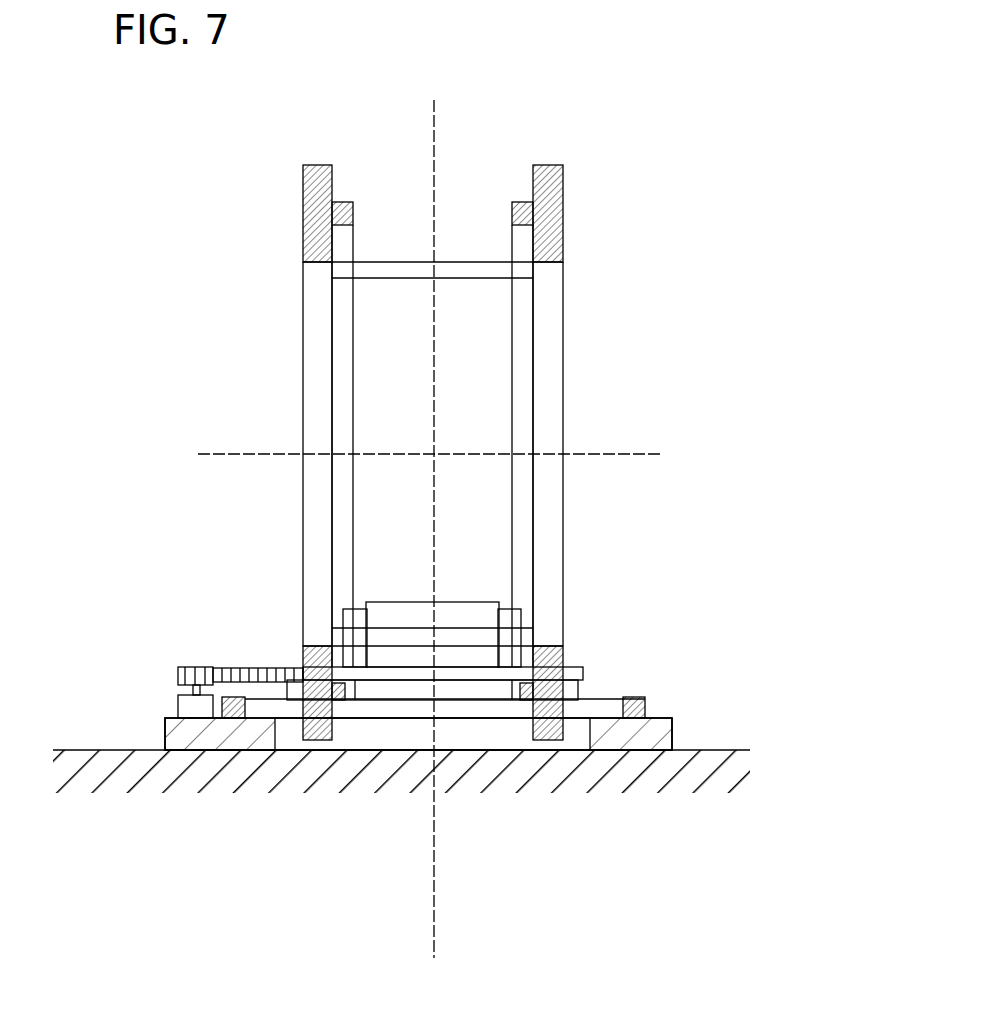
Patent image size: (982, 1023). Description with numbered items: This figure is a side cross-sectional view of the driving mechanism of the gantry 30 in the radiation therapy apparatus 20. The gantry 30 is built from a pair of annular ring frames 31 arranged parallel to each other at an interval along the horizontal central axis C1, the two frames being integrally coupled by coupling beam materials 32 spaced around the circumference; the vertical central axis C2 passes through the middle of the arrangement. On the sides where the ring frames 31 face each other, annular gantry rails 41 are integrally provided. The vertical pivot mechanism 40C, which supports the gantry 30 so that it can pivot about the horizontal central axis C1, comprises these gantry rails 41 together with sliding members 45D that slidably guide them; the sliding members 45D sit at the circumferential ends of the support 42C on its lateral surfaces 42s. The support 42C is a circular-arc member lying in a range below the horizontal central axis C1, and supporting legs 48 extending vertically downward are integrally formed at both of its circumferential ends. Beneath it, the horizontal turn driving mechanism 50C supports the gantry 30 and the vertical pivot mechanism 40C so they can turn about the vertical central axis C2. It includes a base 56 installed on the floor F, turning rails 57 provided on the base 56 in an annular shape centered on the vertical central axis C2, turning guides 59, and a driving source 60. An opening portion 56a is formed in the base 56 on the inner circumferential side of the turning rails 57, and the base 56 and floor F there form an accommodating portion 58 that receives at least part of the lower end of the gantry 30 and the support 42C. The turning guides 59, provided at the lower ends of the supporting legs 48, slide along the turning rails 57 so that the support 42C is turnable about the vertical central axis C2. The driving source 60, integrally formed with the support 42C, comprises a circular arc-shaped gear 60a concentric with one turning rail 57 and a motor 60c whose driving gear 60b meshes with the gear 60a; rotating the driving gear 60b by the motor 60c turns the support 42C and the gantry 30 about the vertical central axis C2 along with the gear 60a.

The radiation therapy apparatus 20 is at (657, 205).
The gantry 30 is at (303, 228).
The ring frame 31 is at (317, 165).
The coupling beam material 32 is at (410, 262).
The gantry rail 41 is at (357, 222).
The lateral surface 42s is at (343, 612).
The support 42C is at (305, 660).
The sliding member 45D is at (340, 630).
The vertical pivot mechanism 40C is at (662, 633).
The supporting leg 48 is at (414, 680).
The horizontal turn driving mechanism 50C is at (732, 722).
The base 56 is at (660, 718).
The opening portion 56a is at (272, 745).
The turning rail 57 is at (638, 697).
The accommodating portion 58 is at (475, 737).
The turning guide 59 is at (288, 700).
The driving source 60 is at (178, 672).
The circular arc-shaped gear 60a is at (240, 667).
The driving gear 60b is at (178, 672).
The motor 60c is at (178, 702).
The horizontal central axis C1 is at (638, 453).
The vertical central axis C2 is at (434, 130).
The floor F is at (92, 750).